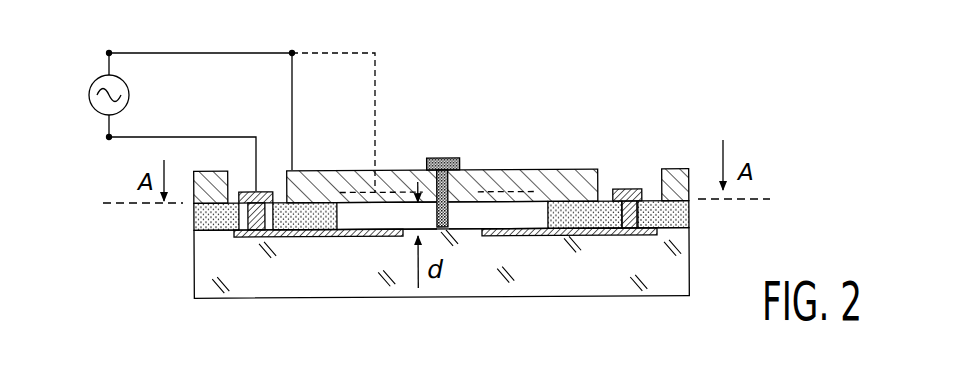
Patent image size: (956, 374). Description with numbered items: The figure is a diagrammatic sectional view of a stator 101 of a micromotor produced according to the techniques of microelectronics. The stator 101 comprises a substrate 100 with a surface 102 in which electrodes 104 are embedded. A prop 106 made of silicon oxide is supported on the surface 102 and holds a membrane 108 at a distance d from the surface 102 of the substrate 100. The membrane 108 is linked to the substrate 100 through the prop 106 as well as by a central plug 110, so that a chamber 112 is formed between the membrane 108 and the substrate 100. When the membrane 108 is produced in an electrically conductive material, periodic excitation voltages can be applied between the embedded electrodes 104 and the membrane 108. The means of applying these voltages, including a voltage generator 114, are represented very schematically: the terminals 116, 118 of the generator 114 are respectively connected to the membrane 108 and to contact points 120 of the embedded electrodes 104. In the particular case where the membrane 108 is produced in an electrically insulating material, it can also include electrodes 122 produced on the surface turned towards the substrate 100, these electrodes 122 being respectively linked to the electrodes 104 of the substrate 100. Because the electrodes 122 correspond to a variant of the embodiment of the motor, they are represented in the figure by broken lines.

The substrate 100 is at (253, 280).
The stator 101 is at (694, 167).
The surface 102 is at (470, 215).
The electrodes 104 is at (247, 237).
The prop 106 is at (210, 217).
The membrane 108 is at (475, 177).
The central plug 110 is at (443, 158).
The chamber 112 is at (367, 217).
The voltage generator 114 is at (123, 105).
The terminal 116 is at (109, 53).
The terminal 118 is at (109, 137).
The contact points 120 is at (264, 191).
The electrodes 122 is at (362, 192).